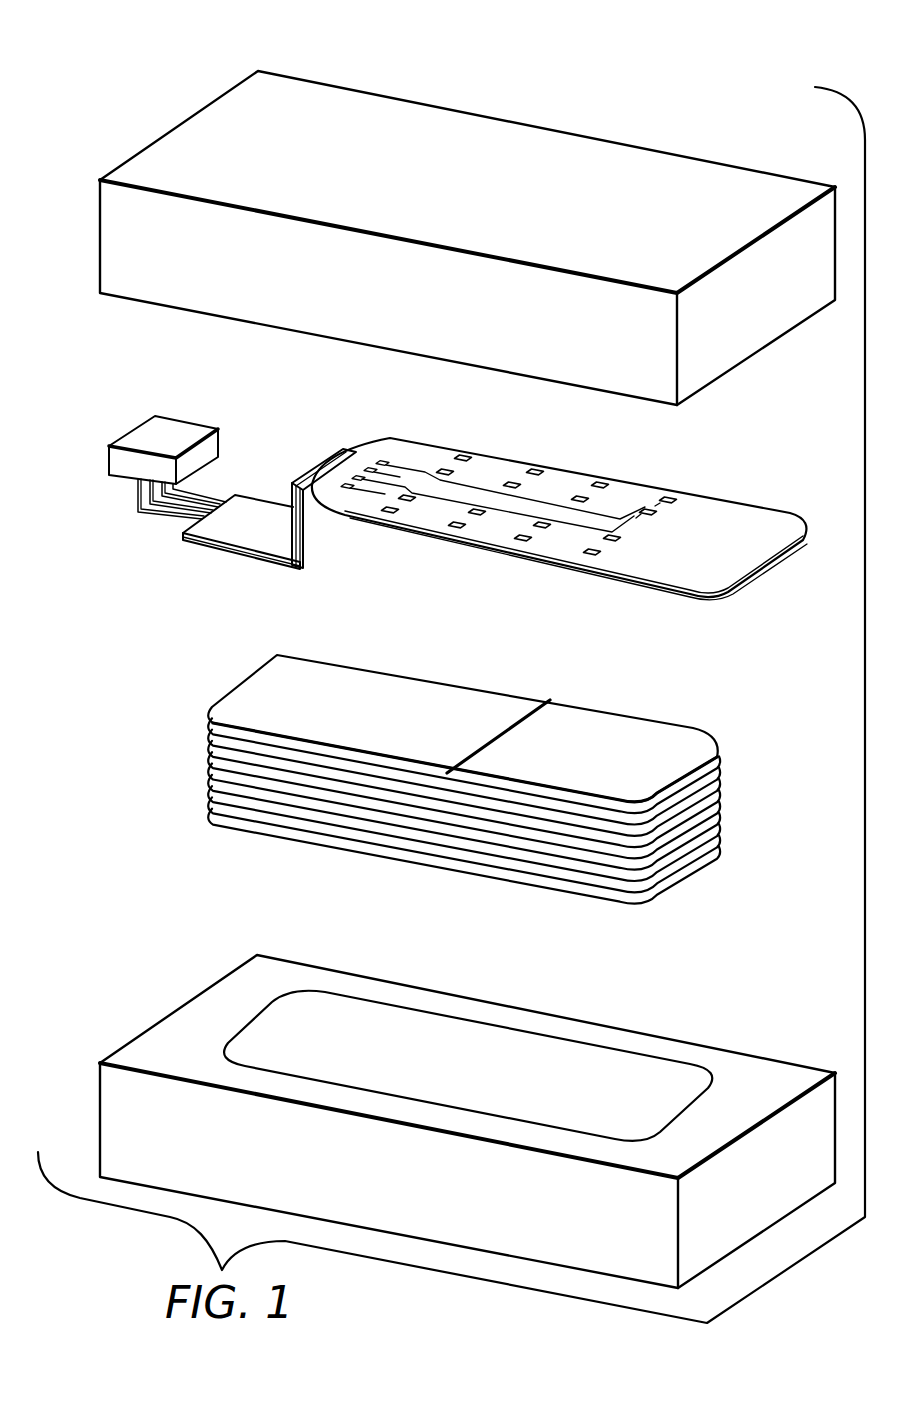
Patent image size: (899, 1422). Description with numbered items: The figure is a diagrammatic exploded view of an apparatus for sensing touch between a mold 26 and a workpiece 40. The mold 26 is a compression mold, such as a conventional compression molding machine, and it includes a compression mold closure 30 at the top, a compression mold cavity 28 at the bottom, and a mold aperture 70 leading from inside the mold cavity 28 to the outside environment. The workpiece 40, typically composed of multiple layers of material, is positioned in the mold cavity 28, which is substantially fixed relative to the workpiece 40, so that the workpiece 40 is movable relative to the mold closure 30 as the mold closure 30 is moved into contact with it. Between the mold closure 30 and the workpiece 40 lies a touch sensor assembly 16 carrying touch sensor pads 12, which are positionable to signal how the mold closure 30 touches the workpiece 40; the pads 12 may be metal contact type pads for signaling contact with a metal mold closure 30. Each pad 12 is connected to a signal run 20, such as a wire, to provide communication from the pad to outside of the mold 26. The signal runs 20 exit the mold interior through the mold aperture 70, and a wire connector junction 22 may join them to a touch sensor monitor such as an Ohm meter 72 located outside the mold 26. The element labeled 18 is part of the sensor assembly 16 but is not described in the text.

The mold 26 is at (132, 28).
The compression mold closure 30 is at (652, 151).
The Ohm meter 72 is at (141, 426).
The signal runs 20 is at (162, 508).
The wire connector junction 22 is at (347, 483).
The touch sensor pad 12 is at (673, 503).
The touch sensor assembly 16 is at (757, 508).
The substrate 18 is at (747, 548).
The workpiece 40 is at (312, 808).
The mold aperture 70 is at (400, 1007).
The compression mold cavity 28 is at (676, 1041).